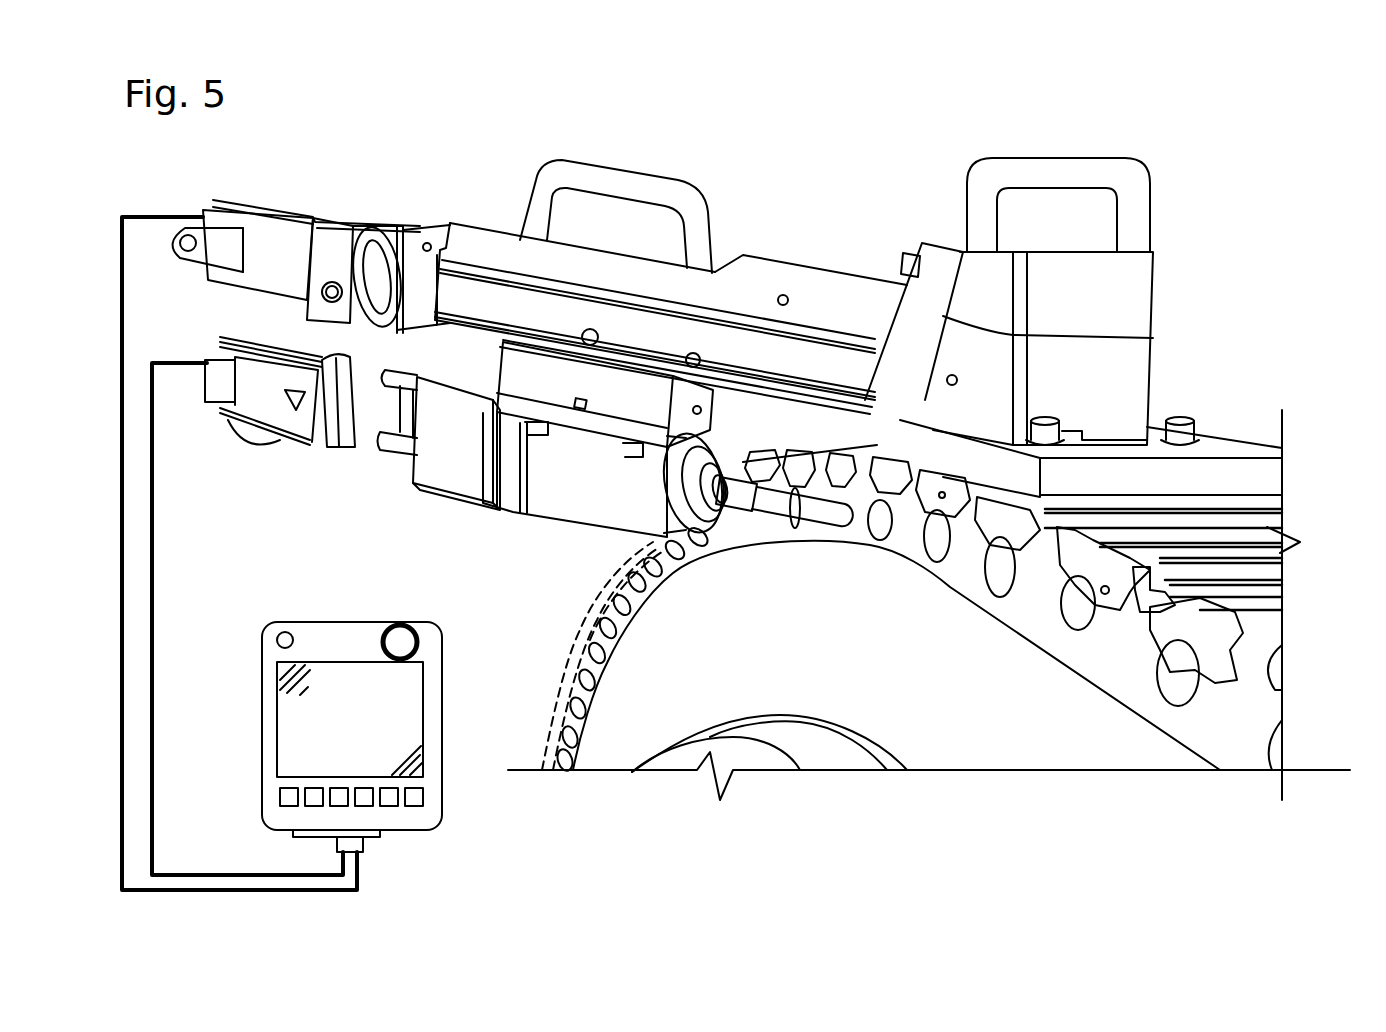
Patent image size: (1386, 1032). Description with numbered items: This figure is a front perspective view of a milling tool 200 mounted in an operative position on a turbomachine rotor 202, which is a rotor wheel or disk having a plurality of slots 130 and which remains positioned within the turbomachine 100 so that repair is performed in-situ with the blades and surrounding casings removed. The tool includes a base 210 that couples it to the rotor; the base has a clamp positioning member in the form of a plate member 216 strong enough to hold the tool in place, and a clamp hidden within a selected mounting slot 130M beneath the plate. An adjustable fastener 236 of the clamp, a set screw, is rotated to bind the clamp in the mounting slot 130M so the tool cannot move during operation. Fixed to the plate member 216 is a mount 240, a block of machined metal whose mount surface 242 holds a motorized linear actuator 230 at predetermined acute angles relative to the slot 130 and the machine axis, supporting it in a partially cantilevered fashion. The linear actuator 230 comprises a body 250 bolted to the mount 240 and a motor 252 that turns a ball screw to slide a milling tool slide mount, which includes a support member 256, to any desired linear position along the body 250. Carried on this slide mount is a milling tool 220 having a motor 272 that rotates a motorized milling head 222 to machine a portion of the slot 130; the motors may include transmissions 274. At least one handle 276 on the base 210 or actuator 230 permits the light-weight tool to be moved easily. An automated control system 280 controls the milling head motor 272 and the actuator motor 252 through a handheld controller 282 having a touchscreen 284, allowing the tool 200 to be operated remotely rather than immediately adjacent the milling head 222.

The turbomachine 100 is at (628, 746).
The slots 130 is at (1238, 683).
The mounting slot 130M is at (947, 483).
The milling tool 200 is at (622, 235).
The turbomachine rotor 202 is at (1262, 612).
The base 210 is at (920, 278).
The plate member 216 is at (1250, 470).
The milling tool 220 is at (455, 510).
The motorized milling head 222 is at (790, 510).
The motorized linear actuator 230 is at (750, 310).
The adjustable fastener 236 is at (1180, 438).
The mount 240 is at (1137, 285).
The mount surface 242 is at (1128, 337).
The body 250 is at (668, 351).
The motor 252 is at (263, 220).
The support member 256 is at (646, 399).
The motor 272 is at (275, 398).
The transmissions 274 is at (437, 440).
The handle 276 is at (1033, 165).
The automated control system 280 is at (295, 553).
The handheld controller 282 is at (402, 822).
The touchscreen 284 is at (374, 732).